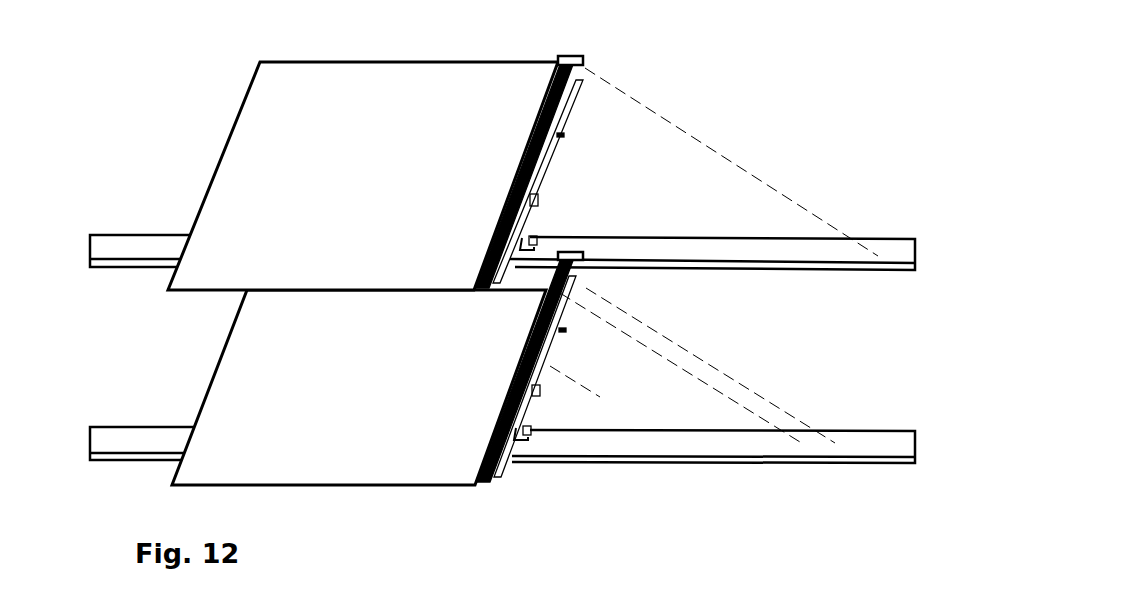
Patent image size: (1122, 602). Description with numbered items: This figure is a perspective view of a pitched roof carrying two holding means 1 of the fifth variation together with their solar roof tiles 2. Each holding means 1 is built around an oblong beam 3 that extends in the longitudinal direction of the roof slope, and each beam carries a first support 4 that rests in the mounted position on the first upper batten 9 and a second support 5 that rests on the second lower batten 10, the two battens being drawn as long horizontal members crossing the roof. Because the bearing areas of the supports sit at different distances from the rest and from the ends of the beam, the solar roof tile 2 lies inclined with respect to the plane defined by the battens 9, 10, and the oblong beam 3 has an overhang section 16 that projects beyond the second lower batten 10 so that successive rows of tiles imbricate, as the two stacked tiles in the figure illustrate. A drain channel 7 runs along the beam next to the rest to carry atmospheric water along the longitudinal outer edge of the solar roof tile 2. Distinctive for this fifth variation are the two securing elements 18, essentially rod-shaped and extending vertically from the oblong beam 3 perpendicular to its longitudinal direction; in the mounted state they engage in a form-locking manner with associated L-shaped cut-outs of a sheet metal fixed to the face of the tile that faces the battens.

The holding means 1 is at (550, 166).
The solar roof tile 2 is at (305, 187).
The oblong beam 3 is at (550, 363).
The first support 4 is at (607, 263).
The second support 5 is at (540, 465).
The drain channel 7 is at (563, 135).
The first upper batten 9 is at (131, 244).
The second lower batten 10 is at (118, 440).
The overhang section 16 is at (458, 505).
The securing elements 18 is at (577, 82).